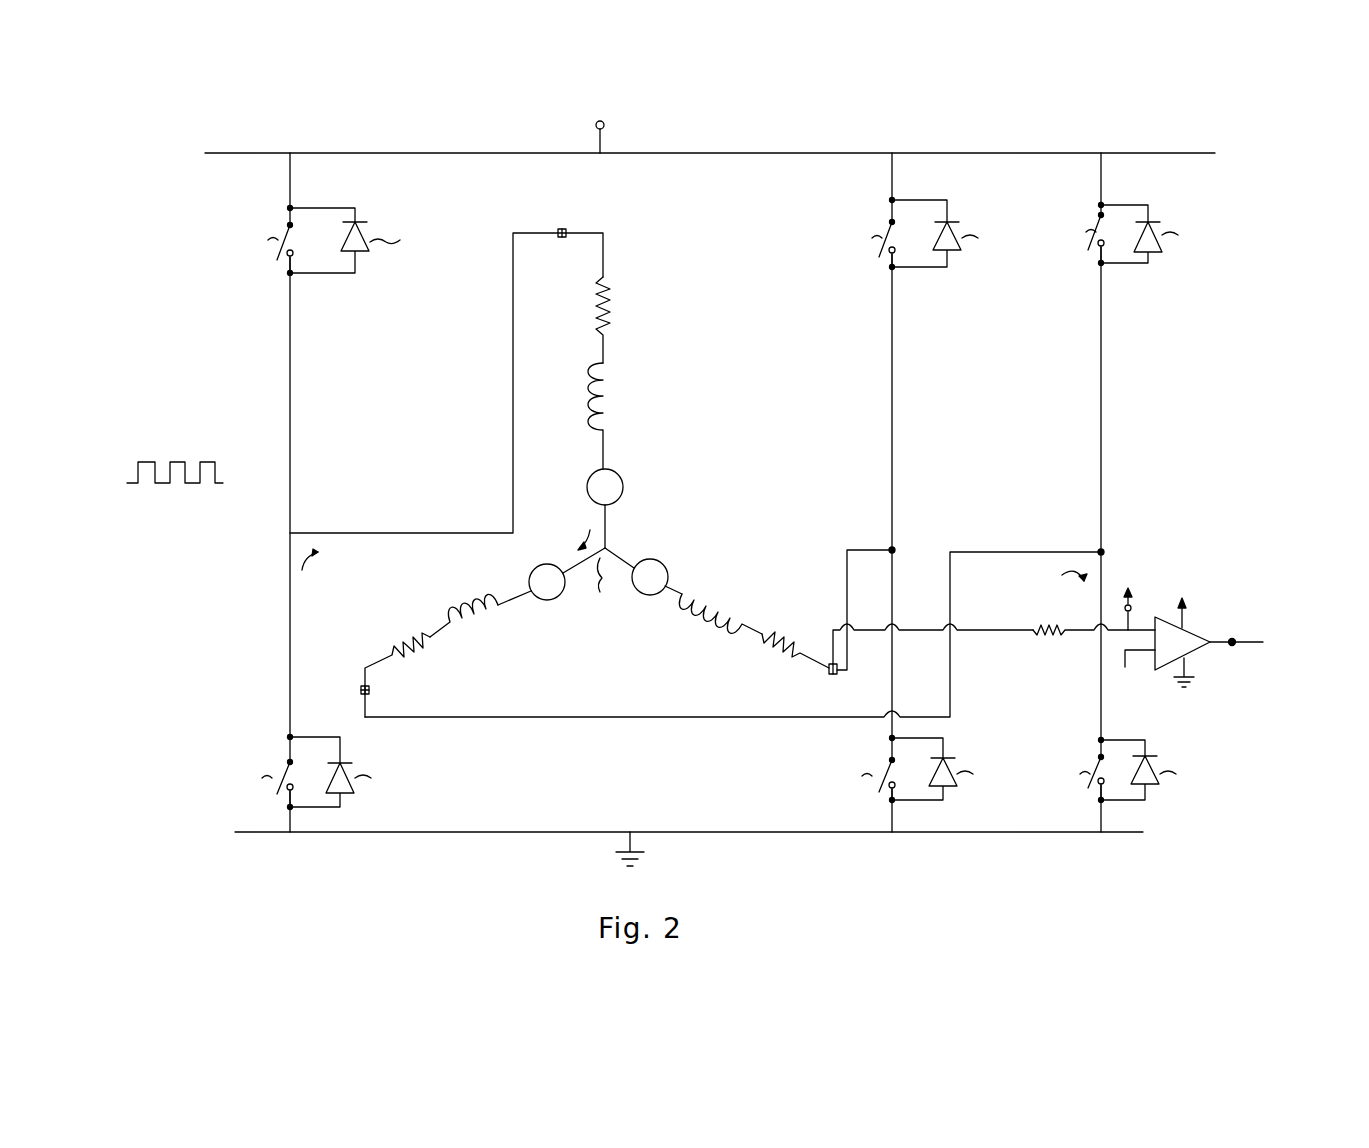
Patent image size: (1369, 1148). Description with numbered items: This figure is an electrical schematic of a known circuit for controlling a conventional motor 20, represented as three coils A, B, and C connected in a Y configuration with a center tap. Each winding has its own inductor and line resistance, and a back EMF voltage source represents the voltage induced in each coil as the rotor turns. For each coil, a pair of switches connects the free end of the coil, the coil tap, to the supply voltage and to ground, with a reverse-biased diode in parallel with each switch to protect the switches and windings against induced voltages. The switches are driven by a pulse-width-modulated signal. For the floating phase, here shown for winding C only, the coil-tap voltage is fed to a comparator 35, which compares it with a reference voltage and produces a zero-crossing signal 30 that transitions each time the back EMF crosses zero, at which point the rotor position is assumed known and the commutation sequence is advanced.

The motor 20 is at (888, 105).
The comparator 35 is at (1190, 628).
The zero-crossing signal 30 is at (1232, 645).